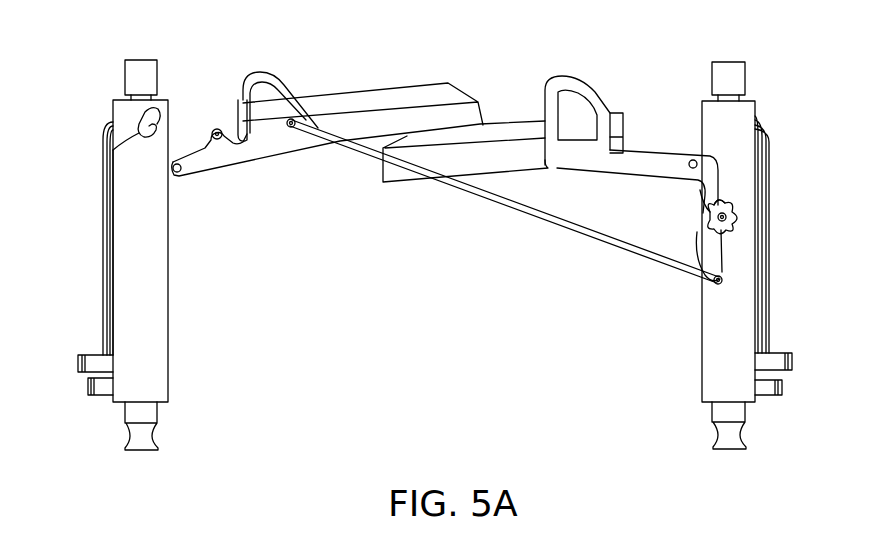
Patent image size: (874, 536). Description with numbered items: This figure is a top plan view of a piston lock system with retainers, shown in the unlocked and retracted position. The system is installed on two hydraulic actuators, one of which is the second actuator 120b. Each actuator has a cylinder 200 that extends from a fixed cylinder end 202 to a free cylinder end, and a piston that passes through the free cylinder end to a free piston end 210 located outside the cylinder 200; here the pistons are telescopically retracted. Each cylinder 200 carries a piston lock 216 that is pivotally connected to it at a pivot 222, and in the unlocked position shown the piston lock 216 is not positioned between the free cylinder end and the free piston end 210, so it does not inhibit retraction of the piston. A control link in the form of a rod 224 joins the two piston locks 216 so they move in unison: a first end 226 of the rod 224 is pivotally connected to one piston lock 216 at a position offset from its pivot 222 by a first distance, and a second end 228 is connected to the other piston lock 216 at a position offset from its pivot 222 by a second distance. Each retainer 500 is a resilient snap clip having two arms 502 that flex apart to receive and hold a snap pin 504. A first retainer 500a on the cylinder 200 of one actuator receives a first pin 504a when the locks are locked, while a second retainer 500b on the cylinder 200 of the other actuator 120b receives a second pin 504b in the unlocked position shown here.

The second actuator 120b is at (785, 155).
The cylinder 200 is at (140, 288).
The fixed cylinder end 202 is at (140, 432).
The free piston end 210 is at (140, 60).
The piston lock 216 is at (368, 100).
The pivot 222 is at (180, 168).
The rod 224 is at (490, 198).
The first end of the rod 226 is at (294, 130).
The second end of the rod 228 is at (711, 288).
The retainer 500 is at (728, 217).
The first retainer 500a is at (103, 152).
The second retainer 500b is at (731, 206).
The arms 502 is at (718, 217).
The snap pin 504 is at (735, 238).
The first pin 504a is at (216, 129).
The second pin 504b is at (717, 208).